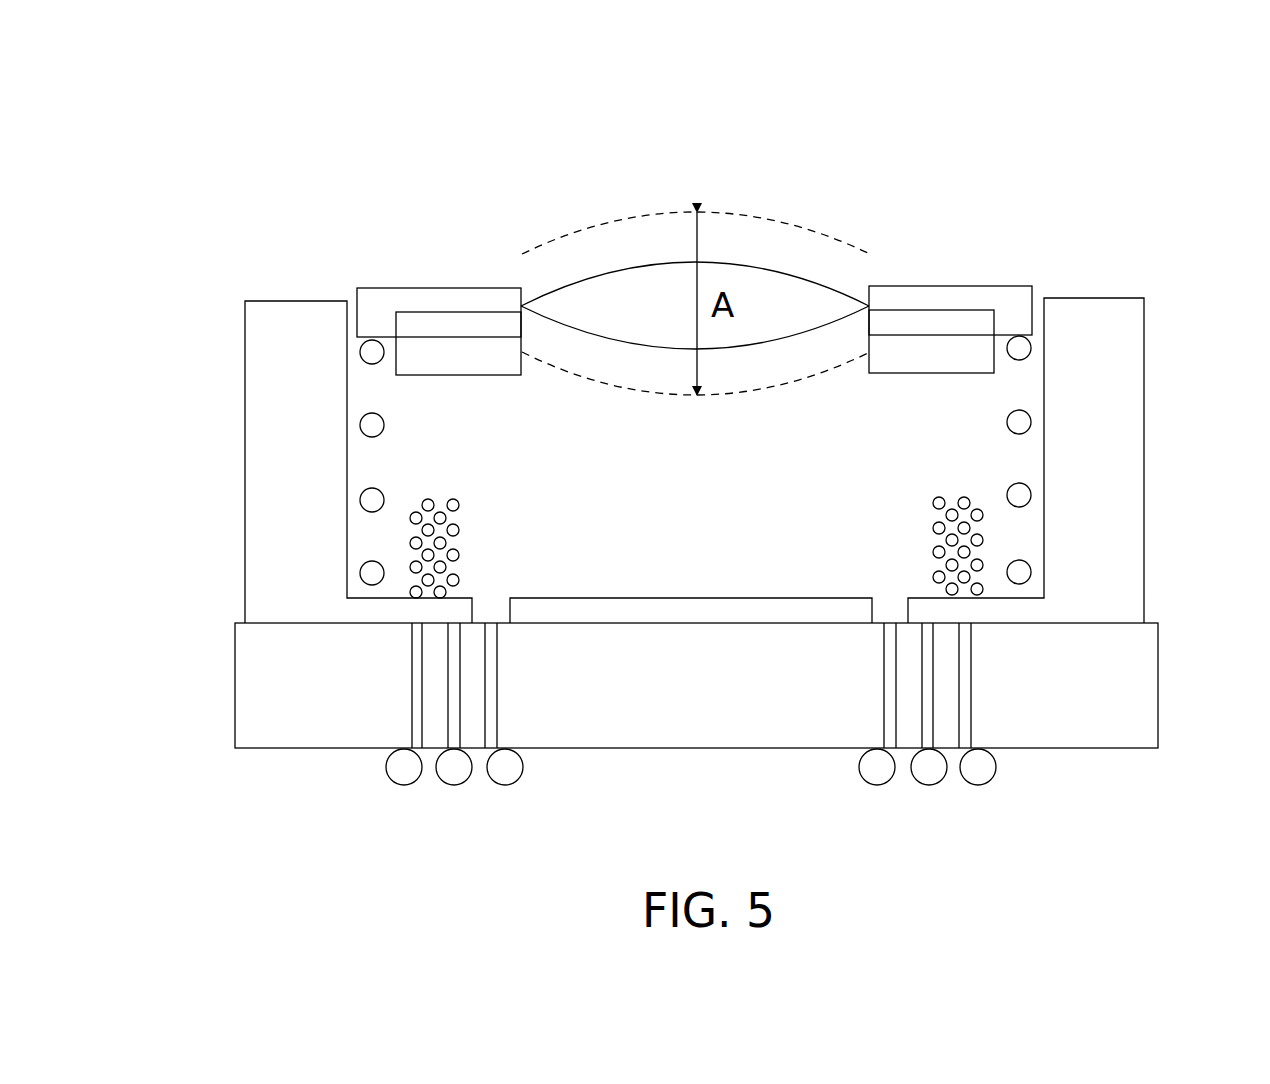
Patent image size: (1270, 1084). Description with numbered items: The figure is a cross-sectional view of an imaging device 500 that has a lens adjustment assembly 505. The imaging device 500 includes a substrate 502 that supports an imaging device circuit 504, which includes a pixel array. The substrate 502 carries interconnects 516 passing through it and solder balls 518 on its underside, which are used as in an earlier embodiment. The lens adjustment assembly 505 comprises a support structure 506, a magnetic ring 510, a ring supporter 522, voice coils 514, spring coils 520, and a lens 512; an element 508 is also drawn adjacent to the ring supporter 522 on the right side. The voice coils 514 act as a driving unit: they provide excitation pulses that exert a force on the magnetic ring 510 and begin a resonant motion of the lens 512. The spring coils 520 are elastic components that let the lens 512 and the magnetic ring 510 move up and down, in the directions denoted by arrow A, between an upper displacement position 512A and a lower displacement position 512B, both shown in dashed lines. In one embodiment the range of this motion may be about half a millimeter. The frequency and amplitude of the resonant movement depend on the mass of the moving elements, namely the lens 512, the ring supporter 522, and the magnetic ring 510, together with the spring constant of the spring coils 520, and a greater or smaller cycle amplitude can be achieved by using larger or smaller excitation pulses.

The imaging device 500 is at (1082, 198).
The substrate 502 is at (1157, 640).
The imaging device circuit 504 is at (672, 597).
The lens adjustment assembly 505 is at (223, 302).
The support structure 506 is at (1144, 413).
The optical element mount 508 is at (1020, 290).
The magnetic ring 510 is at (945, 377).
The lens 512 is at (560, 287).
The upper displacement position 512A is at (647, 210).
The lower displacement position 512B is at (672, 397).
The voice coils 514 is at (932, 522).
The interconnects 516 is at (972, 692).
The solder balls 518 is at (988, 783).
The spring coils 520 is at (1018, 485).
The ring supporter 522 is at (918, 285).